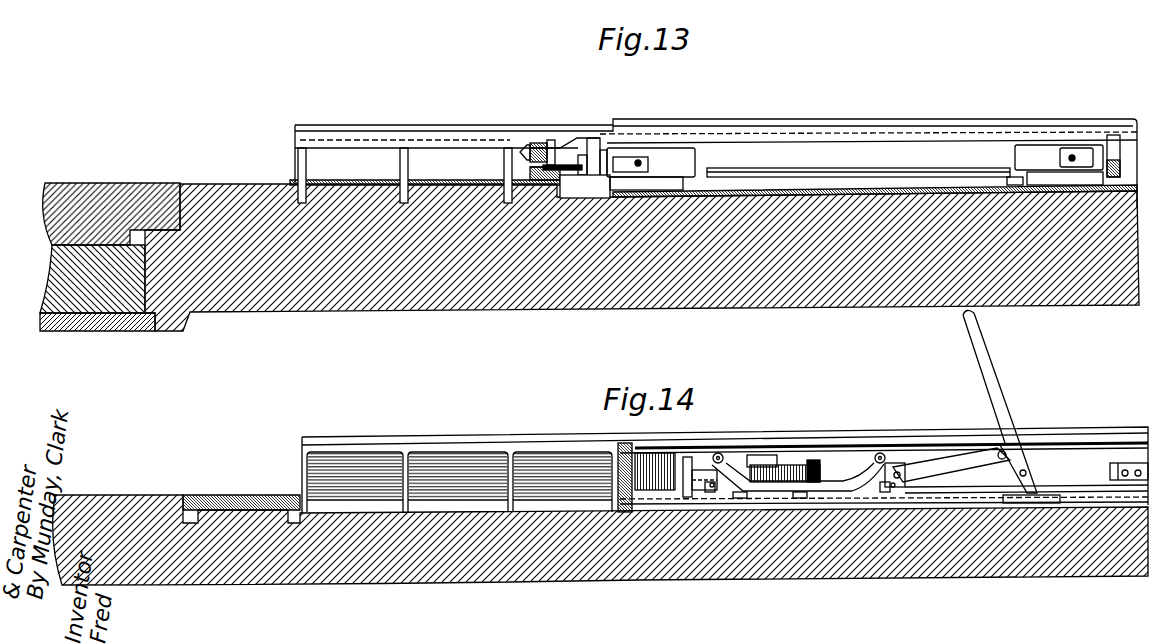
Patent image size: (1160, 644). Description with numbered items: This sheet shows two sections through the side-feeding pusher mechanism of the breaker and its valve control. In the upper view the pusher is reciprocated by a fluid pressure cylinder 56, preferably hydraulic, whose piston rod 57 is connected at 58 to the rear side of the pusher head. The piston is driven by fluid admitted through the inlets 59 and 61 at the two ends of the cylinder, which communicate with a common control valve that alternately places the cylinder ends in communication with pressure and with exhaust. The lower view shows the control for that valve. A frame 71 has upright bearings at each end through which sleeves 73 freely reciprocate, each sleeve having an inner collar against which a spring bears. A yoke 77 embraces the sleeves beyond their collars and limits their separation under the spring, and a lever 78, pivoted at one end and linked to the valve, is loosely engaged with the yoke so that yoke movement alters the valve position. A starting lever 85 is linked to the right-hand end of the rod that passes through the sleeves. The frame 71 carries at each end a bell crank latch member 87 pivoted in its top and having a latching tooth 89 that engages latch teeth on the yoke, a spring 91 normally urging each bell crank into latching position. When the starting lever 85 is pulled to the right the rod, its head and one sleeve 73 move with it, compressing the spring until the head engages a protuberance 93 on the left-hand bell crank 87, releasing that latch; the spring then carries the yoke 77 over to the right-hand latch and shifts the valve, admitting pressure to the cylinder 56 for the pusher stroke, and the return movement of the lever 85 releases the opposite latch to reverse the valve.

In FIG. 13, the fluid pressure cylinder 56 is at (871, 157).
In FIG. 13, the piston rod 57 is at (567, 160).
In FIG. 13, the connection of piston rod to pusher head 58 is at (543, 147).
In FIG. 13, the fluid pressure inlet 59 is at (640, 162).
In FIG. 13, the fluid pressure inlet 61 is at (1073, 157).
In FIG. 14, the frame 71 is at (837, 492).
In FIG. 14, the sleeve 73 is at (830, 468).
In FIG. 14, the yoke 77 is at (806, 460).
In FIG. 14, the lever 78 is at (770, 455).
In FIG. 14, the starting lever 85 is at (1010, 387).
In FIG. 14, the bell crank latch member 87 is at (722, 492).
In FIG. 14, the latching tooth 89 is at (853, 446).
In FIG. 14, the spring 91 is at (878, 492).
In FIG. 14, the protuberance 93 is at (715, 488).